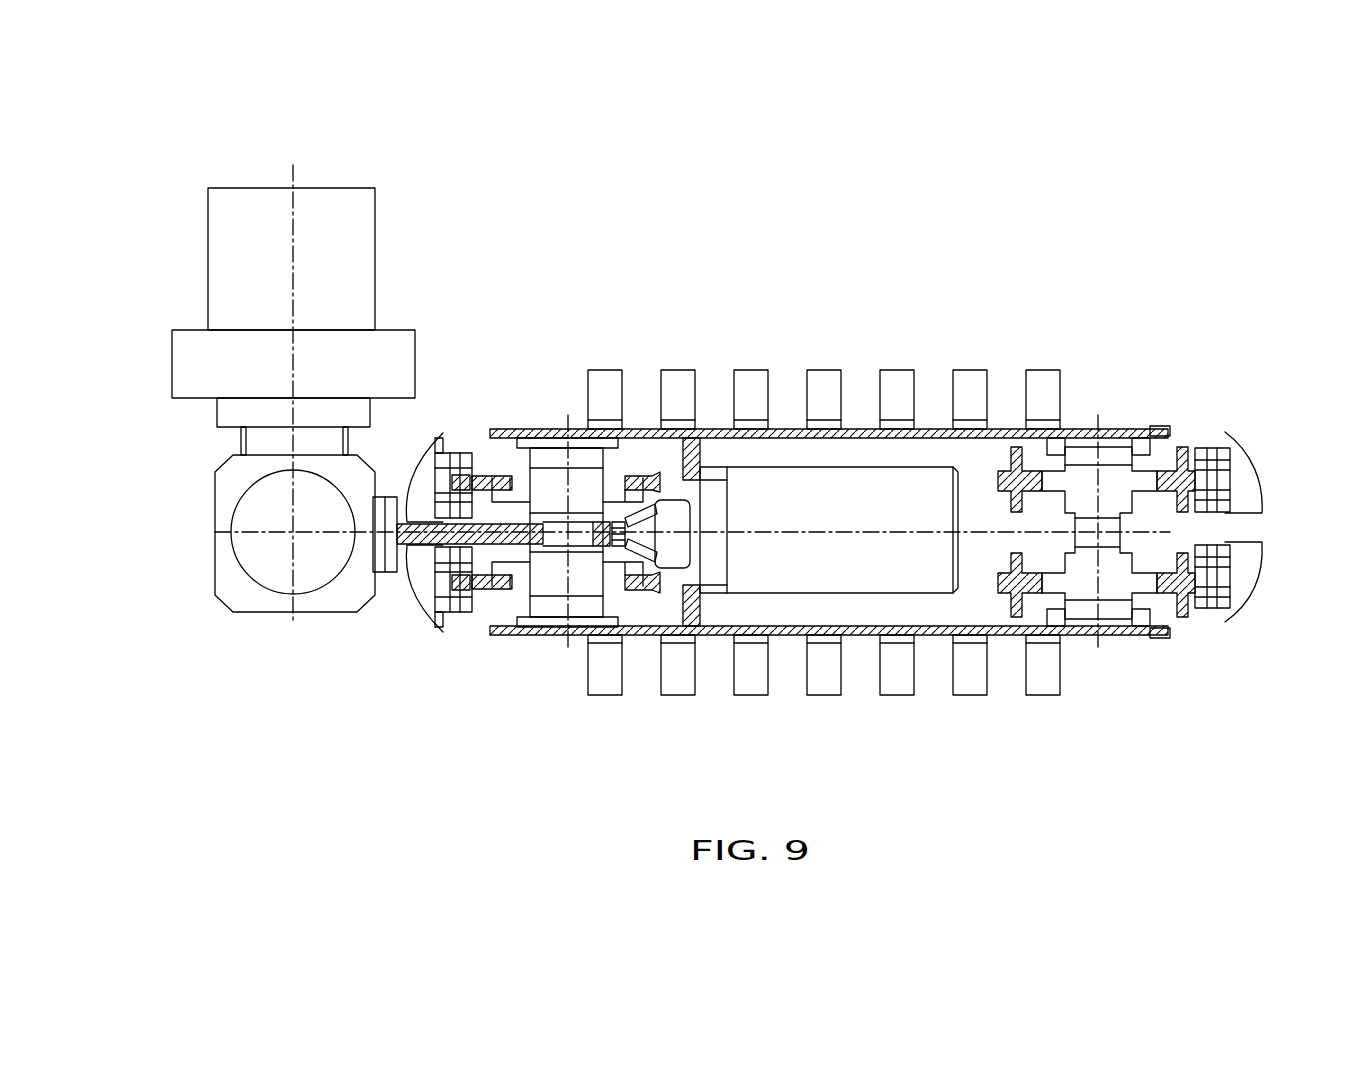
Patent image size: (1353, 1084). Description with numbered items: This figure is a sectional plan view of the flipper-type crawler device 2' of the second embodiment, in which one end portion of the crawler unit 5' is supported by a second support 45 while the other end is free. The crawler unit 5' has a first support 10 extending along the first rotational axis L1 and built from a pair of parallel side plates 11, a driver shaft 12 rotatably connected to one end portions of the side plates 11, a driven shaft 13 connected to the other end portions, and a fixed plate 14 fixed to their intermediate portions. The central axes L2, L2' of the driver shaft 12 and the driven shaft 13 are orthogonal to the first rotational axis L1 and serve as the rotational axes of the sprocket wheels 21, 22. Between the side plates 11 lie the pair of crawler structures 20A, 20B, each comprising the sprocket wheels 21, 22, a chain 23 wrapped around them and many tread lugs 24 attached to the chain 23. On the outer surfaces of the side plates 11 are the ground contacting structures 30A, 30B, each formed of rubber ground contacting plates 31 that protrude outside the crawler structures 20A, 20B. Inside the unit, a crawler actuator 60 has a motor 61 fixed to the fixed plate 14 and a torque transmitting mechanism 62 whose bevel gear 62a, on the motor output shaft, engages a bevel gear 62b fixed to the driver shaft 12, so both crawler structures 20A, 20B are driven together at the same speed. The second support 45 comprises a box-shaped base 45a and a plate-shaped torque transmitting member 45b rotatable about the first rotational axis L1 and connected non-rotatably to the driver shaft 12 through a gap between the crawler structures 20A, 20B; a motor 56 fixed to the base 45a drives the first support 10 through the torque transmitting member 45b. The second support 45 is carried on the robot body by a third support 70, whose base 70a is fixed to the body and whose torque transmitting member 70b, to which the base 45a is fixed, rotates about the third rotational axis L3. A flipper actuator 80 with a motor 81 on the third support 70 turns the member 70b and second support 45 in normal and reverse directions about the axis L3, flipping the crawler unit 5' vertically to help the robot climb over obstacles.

The crawler device 2' is at (752, 468).
The crawler unit 5' is at (1121, 506).
The first support 10 is at (829, 520).
The side plates 11 is at (788, 429).
The driver shaft 12 is at (550, 608).
The driven shaft 13 is at (1097, 636).
The fixed plate 14 is at (703, 612).
The crawler structure 20A is at (1188, 640).
The crawler structure 20B is at (1185, 425).
The sprocket wheel 21 is at (641, 475).
The sprocket wheel 22 is at (1012, 460).
The chain 23 is at (1210, 447).
The tread lugs 24 is at (425, 430).
The ground contacting structure 30A is at (900, 705).
The ground contacting structure 30B is at (745, 360).
The ground contacting plates 31 is at (678, 378).
The second support 45 is at (332, 583).
The base 45a is at (335, 613).
The torque transmitting member 45b is at (403, 536).
The motor 56 is at (265, 571).
The crawler actuator 60 is at (829, 506).
The motor 61 is at (857, 567).
The torque transmitting mechanism 62 is at (658, 520).
The bevel gear 62a is at (643, 540).
The bevel gear 62b is at (581, 568).
The third support 70 is at (262, 354).
The base 70a is at (205, 374).
The torque transmitting member 70b is at (265, 445).
The flipper actuator 80 is at (349, 216).
The motor 81 is at (333, 215).
The first rotational axis L1 is at (818, 525).
The second rotational axis L2 is at (541, 476).
The second rotational axis L2' is at (1129, 482).
The third rotational axis L3 is at (297, 279).